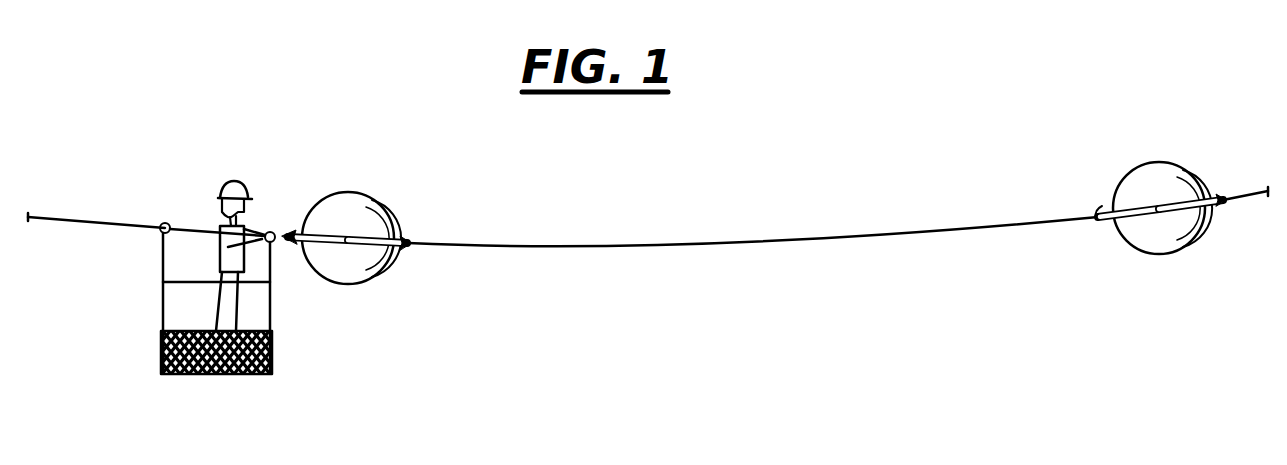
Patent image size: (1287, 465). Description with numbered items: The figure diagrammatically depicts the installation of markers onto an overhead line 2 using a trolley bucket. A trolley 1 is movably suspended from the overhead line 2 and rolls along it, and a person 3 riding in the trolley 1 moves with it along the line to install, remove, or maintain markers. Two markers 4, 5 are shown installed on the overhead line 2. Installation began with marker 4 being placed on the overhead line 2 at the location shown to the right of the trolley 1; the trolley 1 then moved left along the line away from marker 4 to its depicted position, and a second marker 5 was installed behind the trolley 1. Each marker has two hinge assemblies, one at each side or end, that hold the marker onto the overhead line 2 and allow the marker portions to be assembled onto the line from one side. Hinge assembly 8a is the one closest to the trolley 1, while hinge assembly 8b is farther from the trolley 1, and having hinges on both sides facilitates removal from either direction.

The trolley 1 is at (163, 298).
The overhead line 2 is at (76, 216).
The person 3 is at (222, 214).
The marker 4 is at (1146, 252).
The second marker 5 is at (359, 284).
The hinge assembly 8a is at (293, 255).
The hinge assembly 8b is at (399, 257).